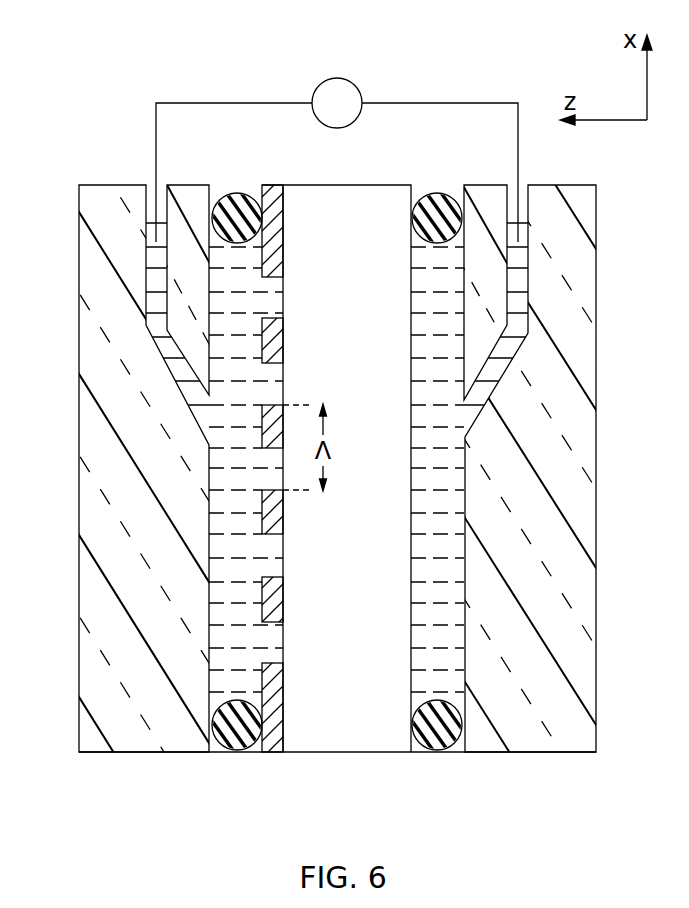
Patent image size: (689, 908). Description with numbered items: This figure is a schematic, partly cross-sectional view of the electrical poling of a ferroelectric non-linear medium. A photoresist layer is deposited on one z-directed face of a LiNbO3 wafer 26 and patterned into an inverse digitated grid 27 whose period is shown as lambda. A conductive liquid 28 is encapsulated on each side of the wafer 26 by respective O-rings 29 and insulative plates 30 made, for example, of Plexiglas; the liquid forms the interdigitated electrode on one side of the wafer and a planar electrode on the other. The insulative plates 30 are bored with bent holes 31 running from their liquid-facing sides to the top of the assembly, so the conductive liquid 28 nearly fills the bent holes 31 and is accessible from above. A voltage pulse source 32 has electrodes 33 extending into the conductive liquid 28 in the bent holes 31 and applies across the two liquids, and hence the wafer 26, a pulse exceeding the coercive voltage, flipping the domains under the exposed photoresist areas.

The LiNbO3 wafer 26 is at (313, 745).
The inverse digitated grid 27 is at (277, 186).
The conductive liquid 28 is at (217, 673).
The O-rings 29 is at (247, 748).
The insulative plates 30 is at (97, 587).
The bent holes 31 is at (153, 302).
The voltage pulse source 32 is at (338, 80).
The electrical leads 33 is at (156, 175).